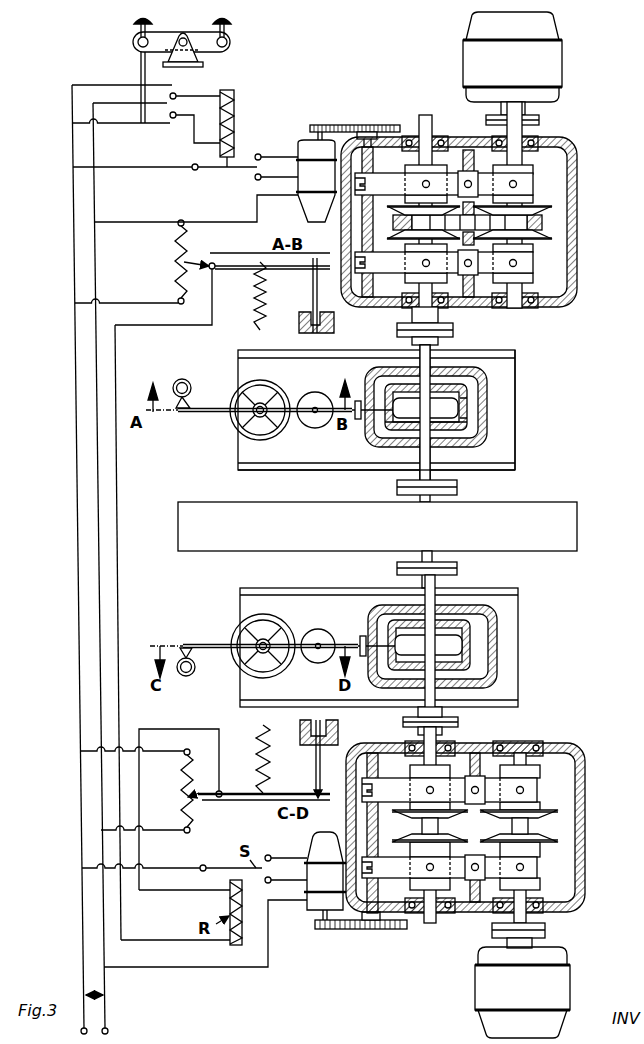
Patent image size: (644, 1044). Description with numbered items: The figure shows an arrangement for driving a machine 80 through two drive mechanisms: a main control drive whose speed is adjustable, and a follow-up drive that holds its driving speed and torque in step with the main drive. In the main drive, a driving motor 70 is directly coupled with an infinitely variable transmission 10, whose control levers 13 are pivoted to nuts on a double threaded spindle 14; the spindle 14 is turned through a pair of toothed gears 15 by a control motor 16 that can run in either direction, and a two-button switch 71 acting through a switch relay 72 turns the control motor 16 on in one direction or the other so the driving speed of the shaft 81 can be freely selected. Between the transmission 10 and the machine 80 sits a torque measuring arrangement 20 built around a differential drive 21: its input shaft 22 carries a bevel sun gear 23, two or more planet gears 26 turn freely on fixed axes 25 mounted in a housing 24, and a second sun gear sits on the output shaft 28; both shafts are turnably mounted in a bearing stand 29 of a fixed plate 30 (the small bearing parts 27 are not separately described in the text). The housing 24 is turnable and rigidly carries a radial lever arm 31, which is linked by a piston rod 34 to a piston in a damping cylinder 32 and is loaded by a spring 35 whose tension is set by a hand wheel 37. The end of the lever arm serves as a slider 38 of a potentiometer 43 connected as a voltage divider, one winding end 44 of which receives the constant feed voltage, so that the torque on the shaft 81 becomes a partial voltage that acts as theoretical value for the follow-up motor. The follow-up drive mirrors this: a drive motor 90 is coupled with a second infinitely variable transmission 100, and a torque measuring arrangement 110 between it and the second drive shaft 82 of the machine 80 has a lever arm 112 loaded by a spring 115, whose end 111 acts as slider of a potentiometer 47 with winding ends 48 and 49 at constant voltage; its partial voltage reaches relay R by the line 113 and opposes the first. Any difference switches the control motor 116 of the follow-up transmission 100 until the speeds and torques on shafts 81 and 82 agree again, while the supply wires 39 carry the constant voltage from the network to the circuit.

The infinitely variable transmission 10 is at (452, 214).
The control levers 13 is at (537, 210).
The double threaded spindle 14 is at (362, 218).
The toothed gears 15 is at (355, 125).
The control motor 16 is at (305, 148).
The torque measuring arrangement 20 is at (398, 403).
The differential drive 21 is at (444, 412).
The input shaft 22 is at (425, 362).
The sun gear 23 is at (442, 391).
The housing 24 is at (487, 436).
The fixed axes 25 is at (472, 408).
The planet gears 26 is at (492, 418).
The bearing support 27 is at (405, 440).
The output shaft 28 is at (420, 478).
The bearing stand 29 is at (498, 466).
The fixed plate 30 is at (498, 450).
The radial lever arm 31 is at (209, 420).
The damping cylinder 32 is at (316, 394).
The piston rod 34 is at (314, 284).
The spring 35 is at (257, 305).
The hand wheel 37 is at (278, 387).
The slider 38 is at (188, 410).
The supply lines 39 is at (117, 482).
The potentiometer 43 is at (191, 386).
The winding end 44 is at (180, 222).
The potentiometer 47 is at (194, 674).
The winding end 48 is at (190, 751).
The winding end 49 is at (190, 831).
The driving motor 70 is at (562, 50).
The two-button switch 71 is at (231, 40).
The switch relay 72 is at (178, 90).
The machine 80 is at (555, 513).
The shaft 81 is at (458, 488).
The second drive shaft 82 is at (445, 559).
The drive motor 90 is at (562, 980).
The infinitely variable transmission 100 is at (590, 794).
The torque measuring arrangement 110 is at (516, 592).
The slider 111 is at (176, 648).
The lever arm 112 is at (201, 642).
The line 113 is at (146, 786).
The spring 115 is at (268, 731).
The control motor 116 is at (316, 905).